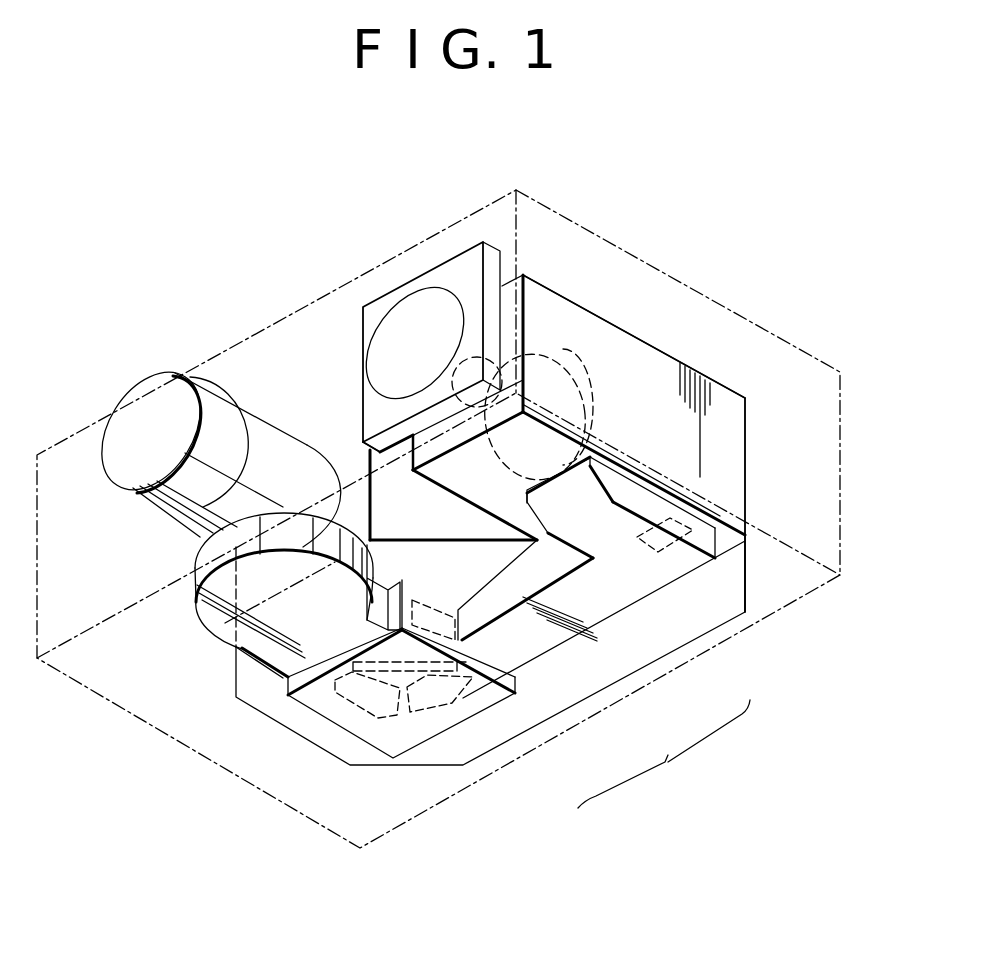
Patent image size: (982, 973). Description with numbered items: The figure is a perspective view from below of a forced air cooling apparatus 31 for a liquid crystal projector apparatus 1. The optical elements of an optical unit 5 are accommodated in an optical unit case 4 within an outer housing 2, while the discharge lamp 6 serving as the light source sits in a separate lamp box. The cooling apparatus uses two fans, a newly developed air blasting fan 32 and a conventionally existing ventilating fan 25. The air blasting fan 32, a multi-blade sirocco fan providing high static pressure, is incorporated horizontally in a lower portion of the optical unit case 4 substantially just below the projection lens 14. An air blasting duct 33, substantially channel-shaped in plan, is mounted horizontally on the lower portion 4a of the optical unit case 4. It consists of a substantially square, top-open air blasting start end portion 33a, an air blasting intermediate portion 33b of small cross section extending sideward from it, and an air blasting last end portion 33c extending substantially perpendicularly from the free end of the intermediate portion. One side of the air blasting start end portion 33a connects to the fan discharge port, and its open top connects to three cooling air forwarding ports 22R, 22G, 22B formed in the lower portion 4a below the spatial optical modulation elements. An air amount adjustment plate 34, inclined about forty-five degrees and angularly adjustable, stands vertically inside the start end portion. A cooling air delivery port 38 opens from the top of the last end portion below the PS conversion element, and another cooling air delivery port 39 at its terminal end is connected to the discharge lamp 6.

The liquid crystal projector apparatus 1 is at (762, 285).
The outer housing 2 is at (798, 343).
The optical unit case 4 is at (658, 347).
The lower portion of the optical unit case 4a is at (697, 622).
The optical unit 5 is at (717, 598).
The discharge lamp 6 is at (552, 363).
The projection lens 14 is at (133, 413).
The cooling air forwarding port 22R is at (438, 603).
The cooling air forwarding port 22G is at (437, 690).
The cooling air forwarding port 22B is at (335, 693).
The ventilating fan 25 is at (403, 328).
The forced air cooling apparatus 31 is at (330, 725).
The air blasting fan 32 is at (243, 640).
The air blasting duct 33 is at (664, 754).
The air blasting start end portion 33a is at (495, 695).
The air blasting intermediate portion 33b is at (568, 625).
The air blasting last end portion 33c is at (610, 545).
The air amount adjustment plate 34 is at (397, 673).
The cooling air delivery port 38 is at (720, 507).
The cooling air delivery port 39 is at (630, 475).